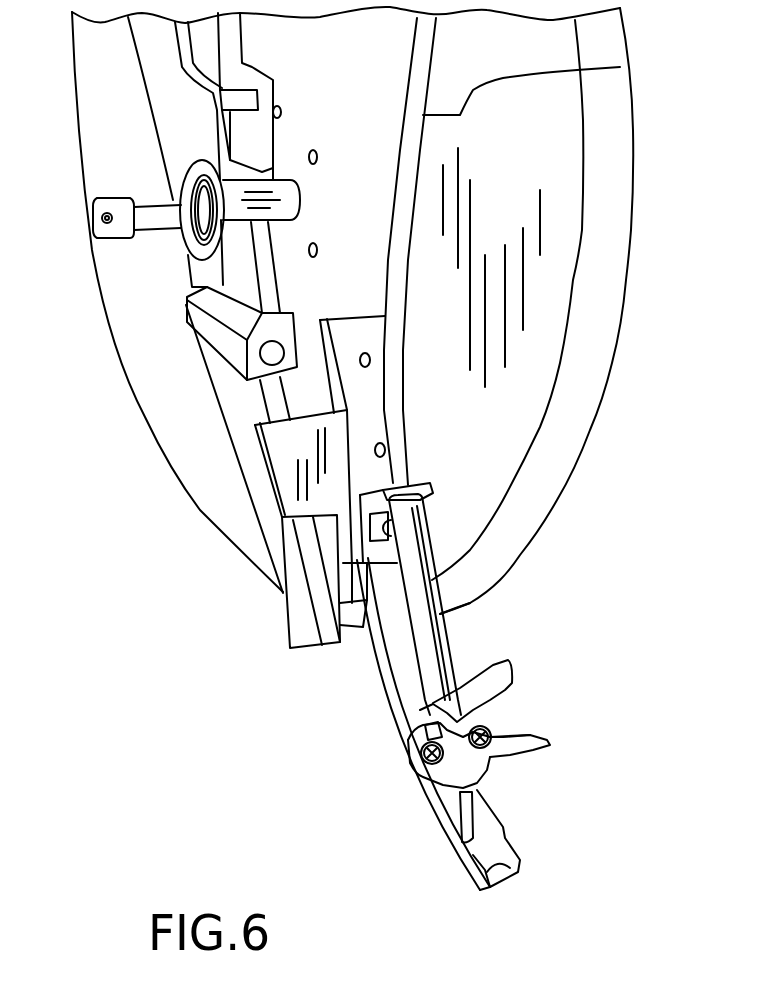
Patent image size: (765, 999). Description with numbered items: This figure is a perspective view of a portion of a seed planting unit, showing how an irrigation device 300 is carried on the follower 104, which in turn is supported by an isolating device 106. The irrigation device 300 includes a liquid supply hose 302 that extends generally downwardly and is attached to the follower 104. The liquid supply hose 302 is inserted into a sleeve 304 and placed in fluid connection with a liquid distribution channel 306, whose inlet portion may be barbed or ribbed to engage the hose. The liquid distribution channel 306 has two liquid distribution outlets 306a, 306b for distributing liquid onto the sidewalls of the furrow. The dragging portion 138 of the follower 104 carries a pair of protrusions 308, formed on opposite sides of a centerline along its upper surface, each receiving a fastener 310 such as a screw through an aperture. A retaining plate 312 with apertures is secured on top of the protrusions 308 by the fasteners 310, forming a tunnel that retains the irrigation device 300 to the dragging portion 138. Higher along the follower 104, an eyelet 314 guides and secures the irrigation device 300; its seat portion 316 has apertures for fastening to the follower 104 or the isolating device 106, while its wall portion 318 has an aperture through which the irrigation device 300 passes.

The follower 104 is at (348, 313).
The isolating device 106 is at (304, 469).
The dragging portion 138 is at (398, 677).
The irrigation device 300 is at (427, 306).
The liquid supply hose 302 is at (620, 67).
The sleeve 304 is at (478, 600).
The liquid distribution channel 306 is at (457, 776).
The liquid distribution outlet 306a is at (447, 840).
The liquid distribution outlet 306b is at (507, 815).
The protrusions 308 is at (481, 674).
The fastener 310 is at (533, 742).
The retaining plate 312 is at (457, 768).
The eyelet 314 is at (429, 513).
The seat portion 316 is at (377, 530).
The wall portion 318 is at (430, 485).